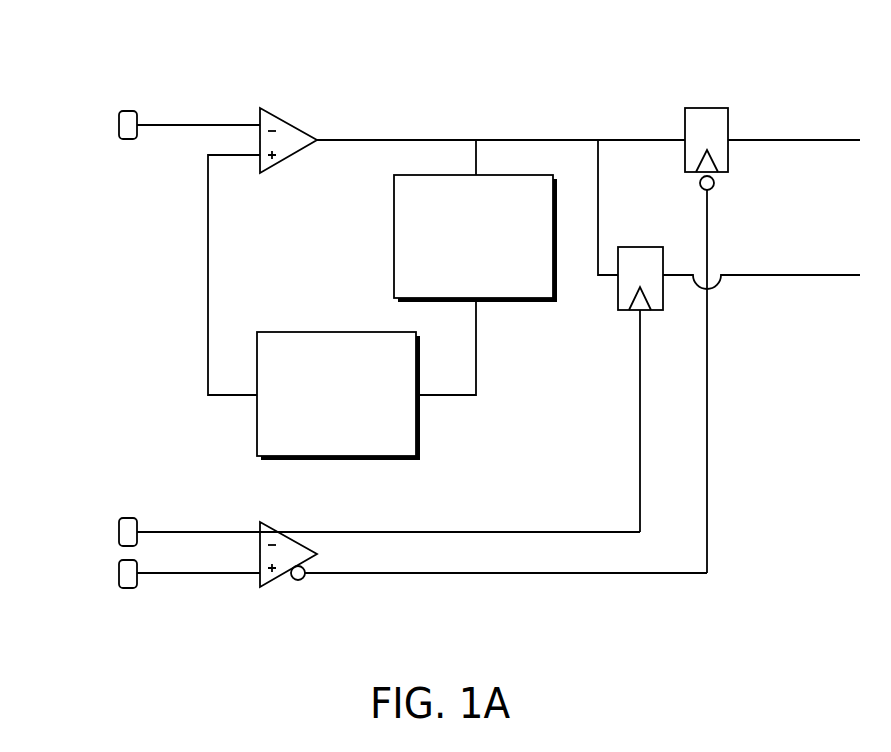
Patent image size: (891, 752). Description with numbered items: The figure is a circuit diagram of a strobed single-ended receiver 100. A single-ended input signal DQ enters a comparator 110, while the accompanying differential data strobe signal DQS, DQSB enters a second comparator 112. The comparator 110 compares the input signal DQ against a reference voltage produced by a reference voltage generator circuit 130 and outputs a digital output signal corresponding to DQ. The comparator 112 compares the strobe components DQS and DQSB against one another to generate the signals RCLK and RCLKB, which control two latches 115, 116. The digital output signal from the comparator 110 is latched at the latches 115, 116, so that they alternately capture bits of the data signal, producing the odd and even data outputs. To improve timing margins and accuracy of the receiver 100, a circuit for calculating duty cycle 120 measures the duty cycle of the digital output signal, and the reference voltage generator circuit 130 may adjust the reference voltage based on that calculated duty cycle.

The strobed single-ended receiver 100 is at (127, 49).
The comparator 110 is at (272, 110).
The comparator 112 is at (272, 522).
The latch 115 is at (638, 245).
The latch 116 is at (705, 107).
The circuit for calculating duty cycle 120 is at (456, 276).
The reference voltage generator circuit 130 is at (318, 434).